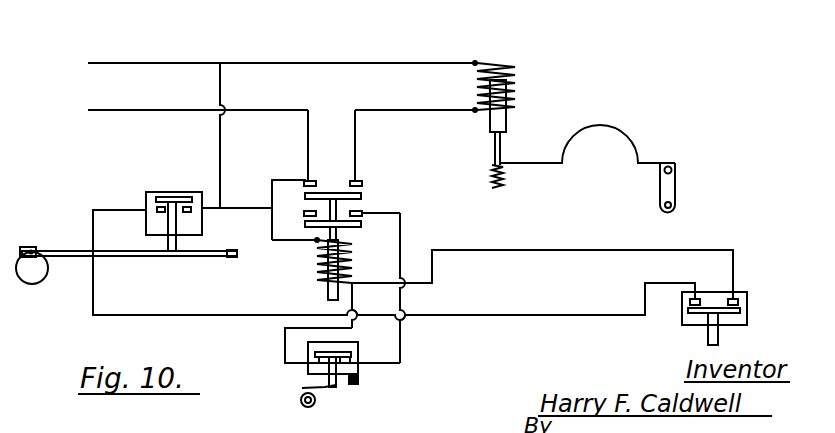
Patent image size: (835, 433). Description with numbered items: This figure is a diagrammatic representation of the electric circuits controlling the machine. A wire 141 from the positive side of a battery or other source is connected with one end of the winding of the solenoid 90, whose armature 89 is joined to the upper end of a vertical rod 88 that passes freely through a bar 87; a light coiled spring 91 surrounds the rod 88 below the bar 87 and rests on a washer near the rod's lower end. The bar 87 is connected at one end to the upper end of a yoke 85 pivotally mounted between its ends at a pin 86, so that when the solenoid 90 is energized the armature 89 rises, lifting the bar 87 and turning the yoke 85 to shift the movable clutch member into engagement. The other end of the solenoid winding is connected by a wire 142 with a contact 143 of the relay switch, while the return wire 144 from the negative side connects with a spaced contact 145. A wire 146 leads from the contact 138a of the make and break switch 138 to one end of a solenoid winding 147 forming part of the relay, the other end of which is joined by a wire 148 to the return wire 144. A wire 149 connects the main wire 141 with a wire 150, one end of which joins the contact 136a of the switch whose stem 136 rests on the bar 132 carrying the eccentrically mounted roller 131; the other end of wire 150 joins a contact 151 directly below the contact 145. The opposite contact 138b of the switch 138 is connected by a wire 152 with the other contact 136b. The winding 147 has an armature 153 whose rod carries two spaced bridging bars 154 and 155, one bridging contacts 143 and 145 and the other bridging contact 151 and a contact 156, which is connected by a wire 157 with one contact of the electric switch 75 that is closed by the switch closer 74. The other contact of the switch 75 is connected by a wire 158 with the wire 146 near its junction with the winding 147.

The wire 141 is at (292, 62).
The wire 144 is at (176, 111).
The wire 142 is at (401, 111).
The wire 149 is at (222, 148).
The wire 150 is at (240, 207).
The contact 145 is at (311, 180).
The contact 143 is at (363, 184).
The contact 151 is at (305, 213).
The contact 156 is at (364, 216).
The bridging bar 154 is at (361, 197).
The bridging bar 155 is at (361, 225).
The solenoid winding 147 is at (320, 268).
The armature 153 is at (338, 286).
The switch stem 136 is at (172, 226).
The contact 136a is at (186, 206).
The contact 136b is at (160, 206).
The bar 132 is at (72, 259).
The roller 131 is at (33, 285).
The wire 148 is at (266, 242).
The wire 157 is at (402, 302).
The wire 146 is at (483, 251).
The wire 152 is at (488, 317).
The wire 158 is at (284, 336).
The electric switch 75 is at (347, 366).
The switch closer 74 is at (322, 392).
The solenoid 90 is at (516, 92).
The armature 89 is at (496, 112).
The vertical rod 88 is at (501, 158).
The coiled spring 91 is at (494, 185).
The bar 87 is at (557, 165).
The yoke 85 is at (676, 190).
The pin 86 is at (672, 170).
The make and break switch 138 is at (740, 316).
The contact 138a is at (736, 298).
The contact 138b is at (679, 281).